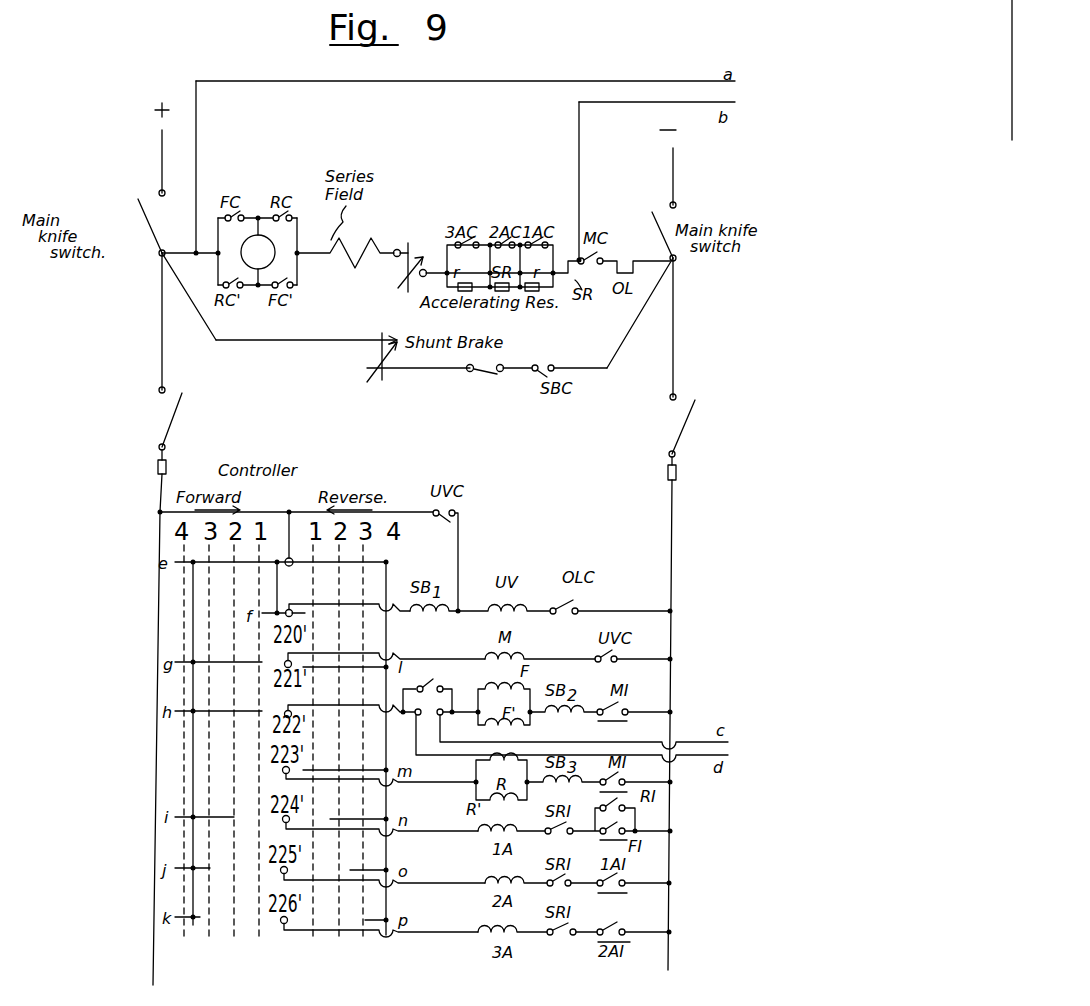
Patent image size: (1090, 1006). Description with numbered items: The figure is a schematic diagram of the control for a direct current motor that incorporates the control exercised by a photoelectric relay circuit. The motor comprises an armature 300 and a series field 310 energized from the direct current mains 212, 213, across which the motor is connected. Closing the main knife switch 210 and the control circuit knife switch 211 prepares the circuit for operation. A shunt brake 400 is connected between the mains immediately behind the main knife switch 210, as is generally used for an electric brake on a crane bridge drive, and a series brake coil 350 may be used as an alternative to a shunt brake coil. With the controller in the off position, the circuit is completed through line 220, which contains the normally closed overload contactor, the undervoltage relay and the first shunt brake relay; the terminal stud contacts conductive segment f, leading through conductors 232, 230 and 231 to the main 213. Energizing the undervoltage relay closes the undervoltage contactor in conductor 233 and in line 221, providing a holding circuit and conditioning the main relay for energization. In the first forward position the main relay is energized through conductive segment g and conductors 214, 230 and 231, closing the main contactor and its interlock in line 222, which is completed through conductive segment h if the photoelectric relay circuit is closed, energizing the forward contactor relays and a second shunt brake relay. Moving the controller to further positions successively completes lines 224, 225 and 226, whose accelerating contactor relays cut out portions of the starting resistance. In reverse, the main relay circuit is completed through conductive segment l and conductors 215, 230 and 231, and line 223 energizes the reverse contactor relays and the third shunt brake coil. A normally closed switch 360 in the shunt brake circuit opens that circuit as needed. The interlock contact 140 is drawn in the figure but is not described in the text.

The interlock contact 140 is at (437, 678).
The main knife switch 210 is at (141, 209).
The control circuit knife switch 211 is at (172, 419).
The direct current main 212 is at (676, 170).
The direct current main 213 is at (162, 157).
The conductor 214 is at (185, 755).
The conductor 215 is at (390, 636).
The line 220 is at (652, 604).
The line 221 is at (572, 650).
The line 222 is at (653, 714).
The line 223 is at (458, 785).
The line 224 is at (464, 834).
The line 225 is at (464, 886).
The line 226 is at (462, 937).
The conductor 230 is at (291, 543).
The conductor 231 is at (290, 507).
The conductor 232 is at (298, 596).
The conductor 233 is at (460, 565).
The armature 300 is at (272, 262).
The series field 310 is at (400, 250).
The series brake coil 350 is at (398, 288).
The normally closed switch 360 is at (485, 375).
The shunt brake 400 is at (378, 380).